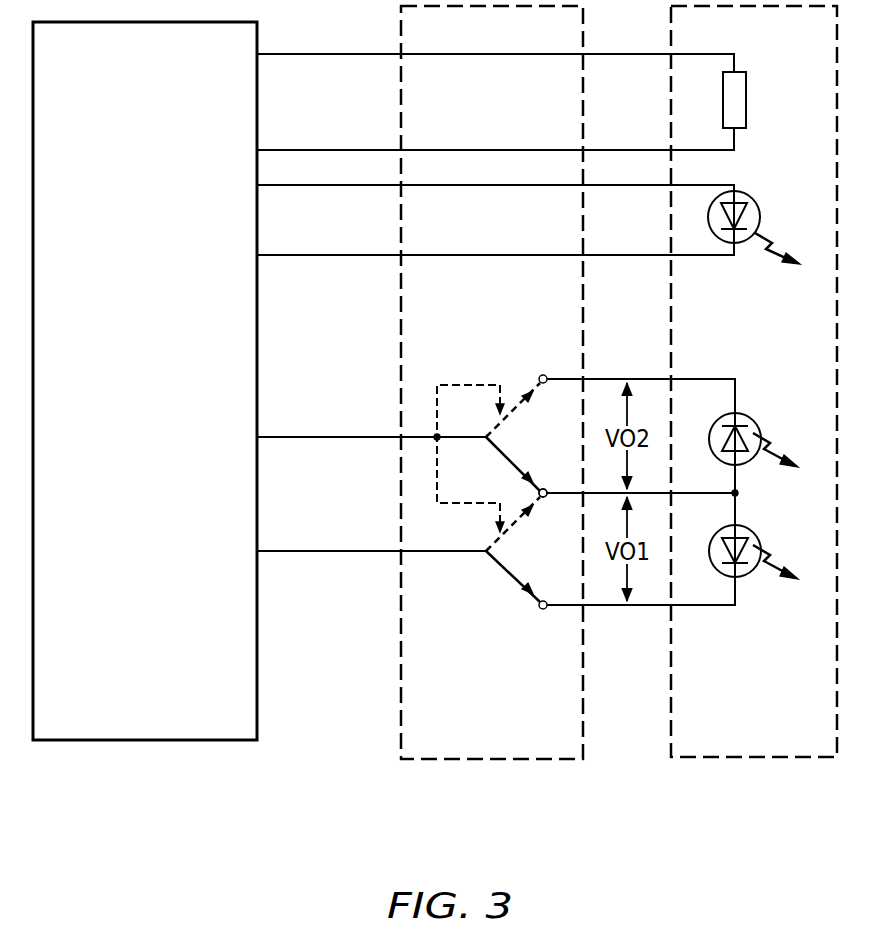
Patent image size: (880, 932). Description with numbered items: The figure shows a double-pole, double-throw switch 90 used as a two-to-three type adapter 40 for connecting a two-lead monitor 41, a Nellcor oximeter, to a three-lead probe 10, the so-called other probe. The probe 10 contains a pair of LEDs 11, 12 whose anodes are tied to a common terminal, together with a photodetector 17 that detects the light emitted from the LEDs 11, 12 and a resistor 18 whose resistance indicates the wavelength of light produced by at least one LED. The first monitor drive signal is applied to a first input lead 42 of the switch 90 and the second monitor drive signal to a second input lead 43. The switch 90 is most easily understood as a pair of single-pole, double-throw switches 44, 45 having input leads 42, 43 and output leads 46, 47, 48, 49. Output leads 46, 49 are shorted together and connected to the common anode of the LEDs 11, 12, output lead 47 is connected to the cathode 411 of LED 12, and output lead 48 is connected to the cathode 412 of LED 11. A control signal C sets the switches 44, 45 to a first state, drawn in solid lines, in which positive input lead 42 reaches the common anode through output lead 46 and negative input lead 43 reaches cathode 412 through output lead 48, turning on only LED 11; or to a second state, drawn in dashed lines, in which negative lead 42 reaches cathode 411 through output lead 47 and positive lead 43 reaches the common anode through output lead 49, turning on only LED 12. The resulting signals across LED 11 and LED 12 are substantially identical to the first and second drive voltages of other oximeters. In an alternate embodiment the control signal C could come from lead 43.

The 3-lead probe 10 is at (754, 409).
The LED 11 is at (757, 540).
The LED 12 is at (757, 417).
The photodetector 17 is at (757, 193).
The resistor 18 is at (738, 100).
The 2-to-3 Type Adapter 40 is at (492, 409).
The 2-lead monitor 41 is at (145, 407).
The first input lead 42 is at (371, 416).
The second input lead 43 is at (371, 574).
The single-pole, double-throw switch 44 is at (498, 415).
The single-pole, double-throw switch 45 is at (492, 560).
The output lead 46 is at (556, 459).
The output lead 47 is at (527, 348).
The output lead 48 is at (551, 633).
The output lead 49 is at (556, 528).
The double-pole, double-throw switch 90 is at (407, 458).
The cathode 411 is at (661, 372).
The cathode 412 is at (661, 618).